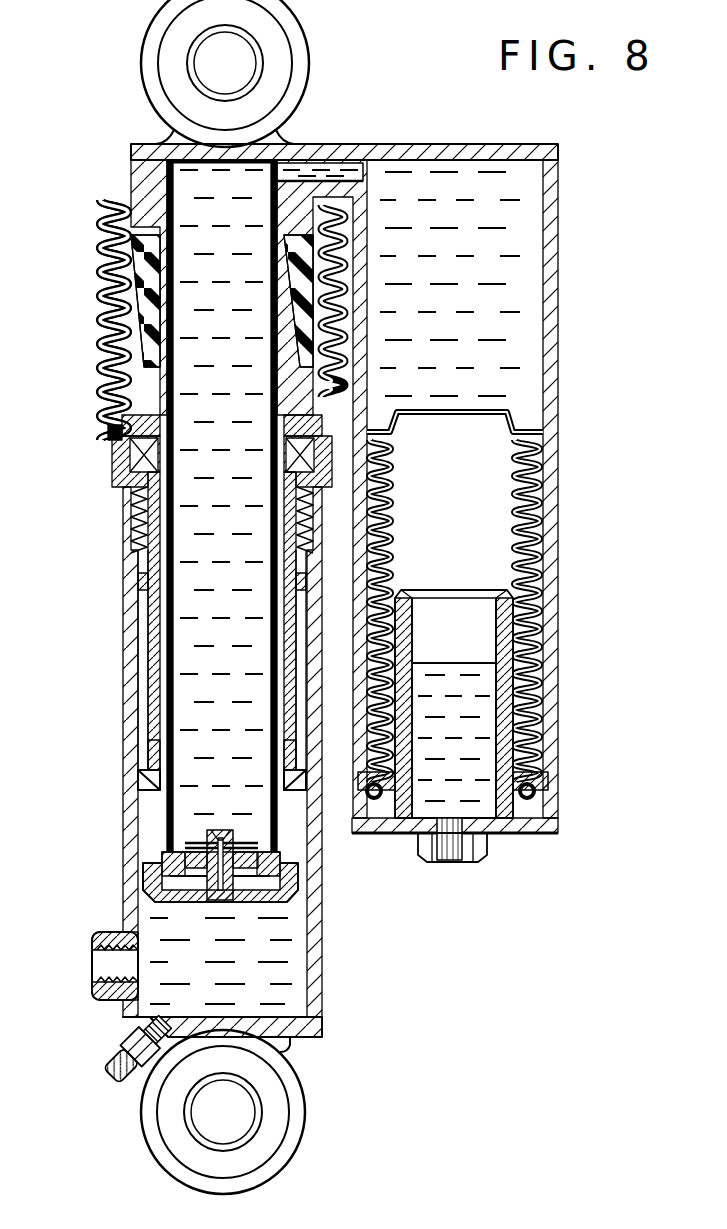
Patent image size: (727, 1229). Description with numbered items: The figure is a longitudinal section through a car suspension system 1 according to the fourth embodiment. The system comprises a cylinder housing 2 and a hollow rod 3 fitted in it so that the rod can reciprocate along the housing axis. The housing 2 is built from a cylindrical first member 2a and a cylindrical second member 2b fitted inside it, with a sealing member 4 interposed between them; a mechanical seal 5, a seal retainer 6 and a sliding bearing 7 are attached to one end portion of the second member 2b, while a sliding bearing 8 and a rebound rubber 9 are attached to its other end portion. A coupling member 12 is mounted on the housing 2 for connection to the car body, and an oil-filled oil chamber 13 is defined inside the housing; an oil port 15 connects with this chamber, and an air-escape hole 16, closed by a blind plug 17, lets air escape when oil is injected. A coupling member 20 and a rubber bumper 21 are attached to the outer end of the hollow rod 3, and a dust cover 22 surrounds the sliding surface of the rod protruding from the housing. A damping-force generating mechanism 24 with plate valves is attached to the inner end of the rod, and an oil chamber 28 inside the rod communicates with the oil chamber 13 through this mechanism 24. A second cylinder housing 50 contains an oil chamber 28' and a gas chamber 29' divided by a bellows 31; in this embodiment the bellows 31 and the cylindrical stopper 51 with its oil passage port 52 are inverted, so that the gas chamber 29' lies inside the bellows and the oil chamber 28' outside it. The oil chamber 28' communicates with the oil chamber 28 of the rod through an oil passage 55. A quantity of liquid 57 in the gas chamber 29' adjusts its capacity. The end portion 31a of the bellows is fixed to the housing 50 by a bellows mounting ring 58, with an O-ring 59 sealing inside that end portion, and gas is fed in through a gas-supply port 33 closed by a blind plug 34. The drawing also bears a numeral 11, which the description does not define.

The suspension system 1 is at (447, 90).
The coupling member 12 is at (150, 34).
The oil passage 55 is at (345, 178).
The dust cover 22 is at (98, 260).
The rubber bumper 21 is at (100, 310).
The hollow rod 3 is at (133, 385).
The seal retainer 6 is at (112, 430).
The mechanical seal 5 is at (114, 458).
The sliding bearing 7 is at (133, 510).
The sealing member 4 is at (140, 582).
The second member 2b is at (150, 625).
The first member 2a is at (140, 651).
The cylinder housing 2 is at (186, 631).
The oil chamber 28 is at (177, 512).
The sliding bearing 8 is at (148, 750).
The rebound rubber 9 is at (143, 780).
The damping-force generating mechanism 24 is at (178, 830).
The outer housing 11 is at (105, 850).
The oil port 15 is at (100, 963).
The air-escape hole 16 is at (150, 1030).
The blind plug 17 is at (118, 1070).
The coupling member 20 is at (310, 1104).
The oil chamber 13 is at (298, 950).
The oil chamber 28' is at (499, 284).
The second cylinder housing 50 is at (558, 438).
The gas chamber 29' is at (495, 511).
The bellows 31 is at (556, 530).
The oil passage port 52 is at (440, 592).
The liquid 57 is at (455, 668).
The cylindrical stopper 51 is at (500, 648).
The bellows mounting ring 58 is at (545, 773).
The end portion 31a is at (540, 795).
The O-ring 59 is at (545, 826).
The gas-supply port 33 is at (483, 827).
The blind plug 34 is at (462, 860).